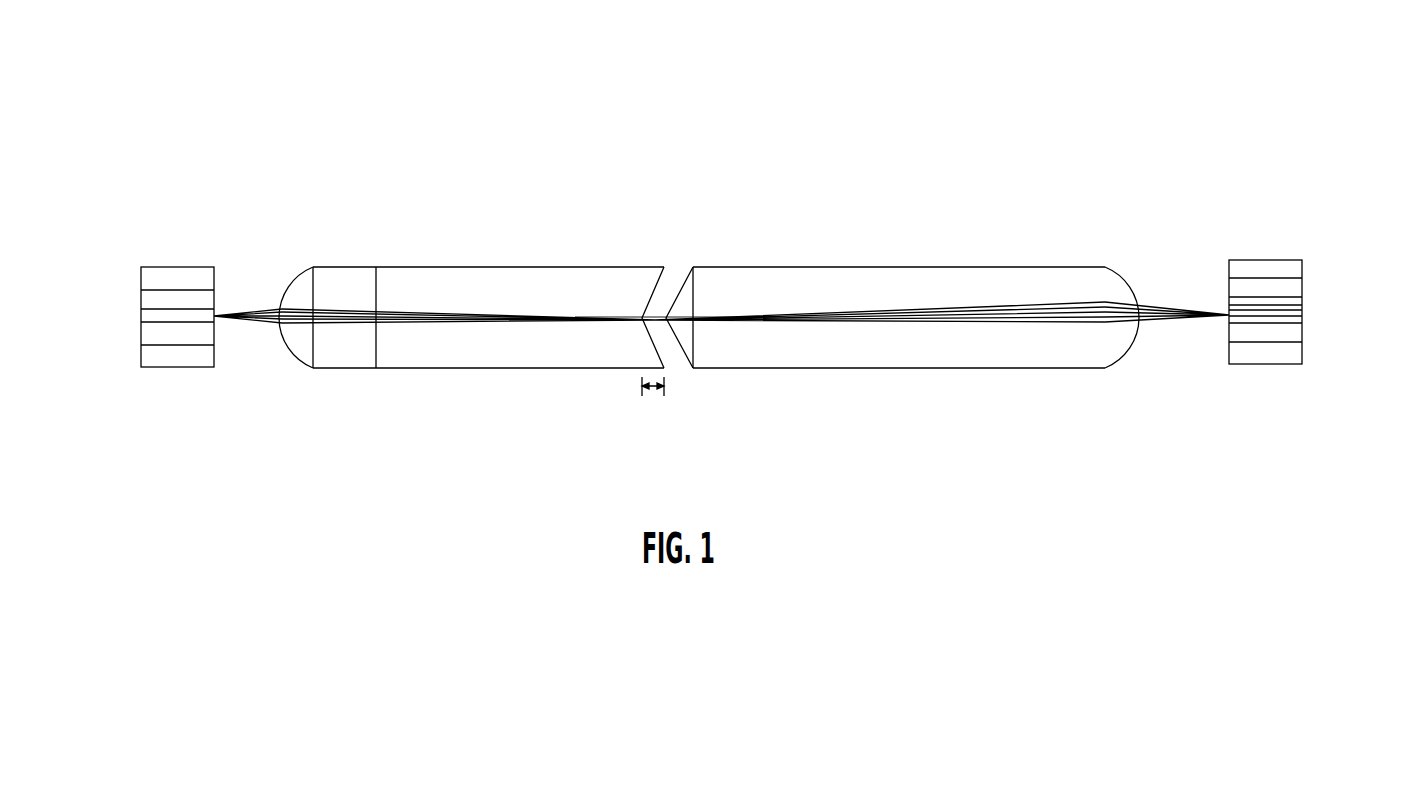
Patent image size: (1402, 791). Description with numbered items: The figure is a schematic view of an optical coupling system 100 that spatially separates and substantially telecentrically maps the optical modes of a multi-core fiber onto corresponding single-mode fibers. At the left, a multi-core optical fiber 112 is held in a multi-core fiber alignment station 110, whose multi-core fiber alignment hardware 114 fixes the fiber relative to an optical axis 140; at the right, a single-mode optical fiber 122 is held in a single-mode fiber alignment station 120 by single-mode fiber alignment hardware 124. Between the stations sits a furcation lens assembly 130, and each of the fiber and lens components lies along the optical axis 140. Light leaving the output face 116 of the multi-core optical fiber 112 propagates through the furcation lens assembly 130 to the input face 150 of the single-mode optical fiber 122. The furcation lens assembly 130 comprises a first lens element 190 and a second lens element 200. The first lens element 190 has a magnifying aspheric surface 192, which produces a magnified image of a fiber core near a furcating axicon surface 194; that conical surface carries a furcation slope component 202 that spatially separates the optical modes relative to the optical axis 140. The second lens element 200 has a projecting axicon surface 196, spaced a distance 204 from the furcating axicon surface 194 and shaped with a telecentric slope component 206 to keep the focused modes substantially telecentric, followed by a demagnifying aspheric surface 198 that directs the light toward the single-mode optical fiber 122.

The optical coupling system 100 is at (1036, 132).
The multi-core fiber alignment station 110 is at (175, 368).
The multi-core optical fiber 112 is at (148, 318).
The multi-core fiber alignment hardware 114 is at (168, 290).
The output face 116 is at (215, 318).
The single-mode fiber alignment station 120 is at (1258, 365).
The single-mode optical fiber 122 is at (1297, 315).
The single-mode fiber alignment hardware 124 is at (1277, 280).
The furcation lens assembly 130 is at (530, 202).
The optical axis 140 is at (826, 312).
The input face 150 is at (1227, 313).
The first lens element 190 is at (424, 239).
The magnifying aspheric surface 192 is at (295, 282).
The furcating axicon surface 194 is at (667, 266).
The projecting axicon surface 196 is at (683, 268).
The demagnifying aspheric surface 198 is at (1121, 268).
The second lens element 200 is at (790, 234).
The furcation slope component 202 is at (643, 310).
The distance 204 is at (652, 396).
The telecentric slope component 206 is at (685, 285).